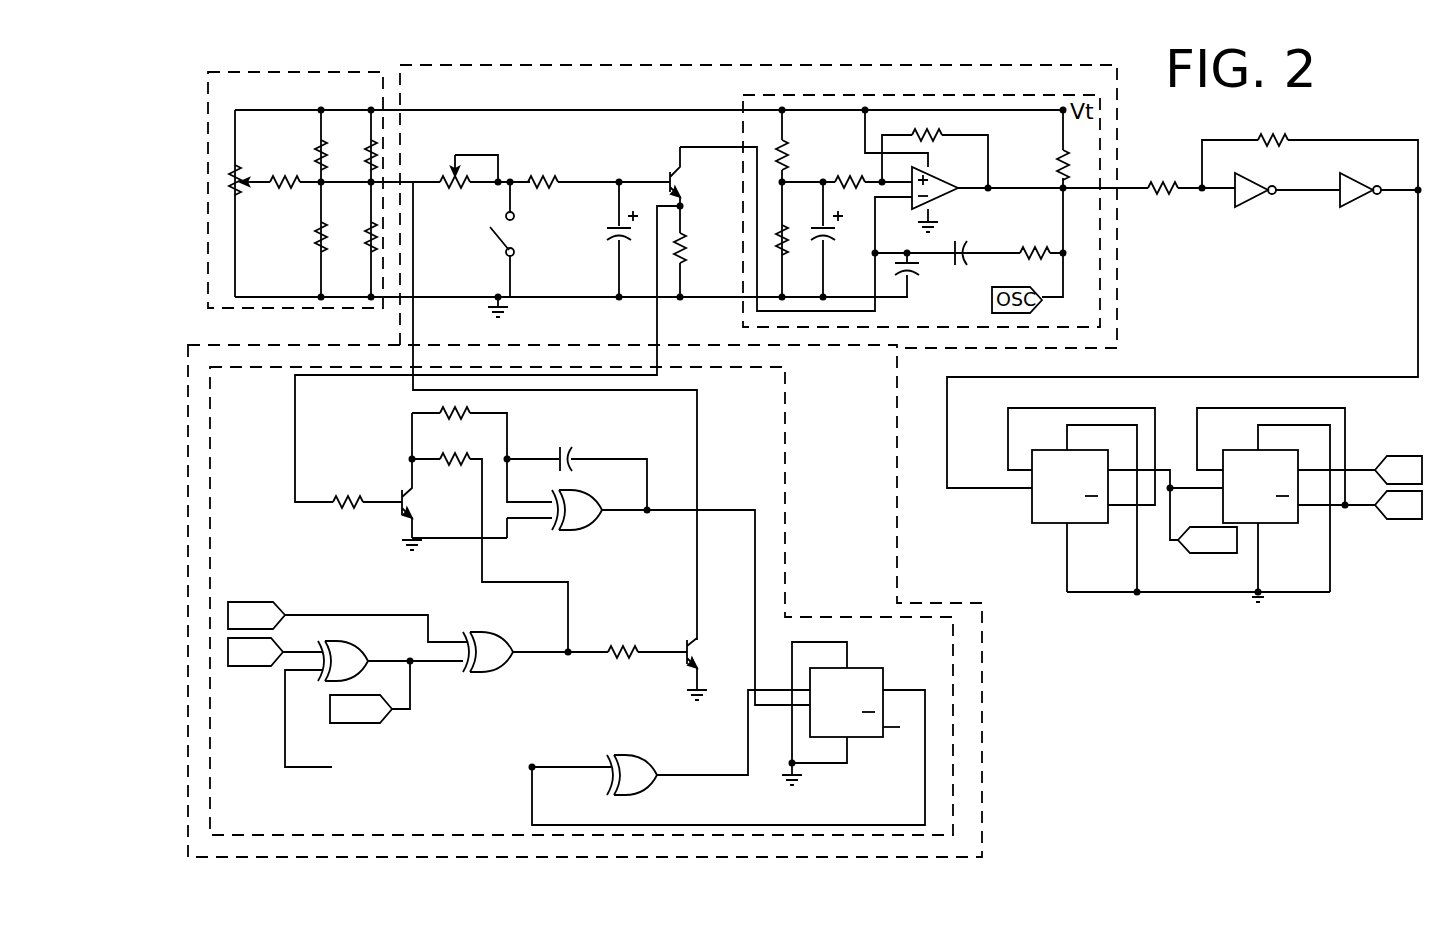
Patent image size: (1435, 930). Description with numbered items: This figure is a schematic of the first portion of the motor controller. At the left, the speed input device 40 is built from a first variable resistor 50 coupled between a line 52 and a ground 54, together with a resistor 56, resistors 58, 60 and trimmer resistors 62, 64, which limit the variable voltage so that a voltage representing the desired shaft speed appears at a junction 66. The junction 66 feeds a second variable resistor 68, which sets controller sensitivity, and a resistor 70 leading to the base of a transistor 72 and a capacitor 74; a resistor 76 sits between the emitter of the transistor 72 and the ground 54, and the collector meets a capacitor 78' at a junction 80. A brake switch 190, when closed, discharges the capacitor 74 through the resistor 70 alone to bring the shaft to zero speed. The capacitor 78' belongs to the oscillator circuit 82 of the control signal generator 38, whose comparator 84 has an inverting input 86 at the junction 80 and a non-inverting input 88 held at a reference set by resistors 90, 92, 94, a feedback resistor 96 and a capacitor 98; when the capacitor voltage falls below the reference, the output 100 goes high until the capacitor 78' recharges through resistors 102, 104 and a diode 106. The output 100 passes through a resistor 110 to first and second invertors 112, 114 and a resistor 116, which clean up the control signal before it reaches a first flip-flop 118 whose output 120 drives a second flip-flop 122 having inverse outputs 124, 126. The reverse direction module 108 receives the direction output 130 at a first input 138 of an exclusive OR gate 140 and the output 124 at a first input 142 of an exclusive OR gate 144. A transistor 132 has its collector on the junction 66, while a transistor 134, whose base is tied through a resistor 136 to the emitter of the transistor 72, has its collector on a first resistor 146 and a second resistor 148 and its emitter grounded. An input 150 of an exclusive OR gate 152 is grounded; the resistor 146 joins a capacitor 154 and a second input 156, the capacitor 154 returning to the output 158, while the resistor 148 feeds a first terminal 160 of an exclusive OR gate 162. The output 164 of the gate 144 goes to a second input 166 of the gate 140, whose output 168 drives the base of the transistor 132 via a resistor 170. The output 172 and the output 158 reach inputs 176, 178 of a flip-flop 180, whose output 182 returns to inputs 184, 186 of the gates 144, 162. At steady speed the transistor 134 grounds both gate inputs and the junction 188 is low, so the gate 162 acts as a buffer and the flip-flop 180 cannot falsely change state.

The control signal generator 38 is at (985, 745).
The speed input device 40 is at (364, 69).
The first variable resistor 50 is at (238, 195).
The line 52 is at (238, 111).
The ground 54 is at (502, 308).
The resistor 56 is at (278, 179).
The resistor 58 is at (318, 155).
The resistor 60 is at (318, 242).
The trimmer resistor 62 is at (368, 155).
The trimmer resistor 64 is at (369, 250).
The junction 66 is at (370, 186).
The second variable resistor 68 is at (466, 187).
The resistor 70 is at (540, 182).
The transistor 72 is at (686, 180).
The capacitor 74 is at (608, 225).
The resistor 76 is at (686, 254).
The capacitor 78' is at (923, 282).
The junction 80 is at (873, 253).
The oscillator circuit 82 is at (738, 97).
The comparator 84 is at (946, 196).
The inverting input 86 is at (898, 201).
The non-inverting input 88 is at (880, 153).
The resistor 90 is at (857, 174).
The resistor 92 is at (780, 152).
The resistor 94 is at (788, 236).
The feedback resistor 96 is at (940, 136).
The capacitor 98 is at (822, 241).
The output 100 is at (1024, 187).
The resistor 102 is at (1058, 158).
The resistor 104 is at (1033, 242).
The diode 106 is at (969, 258).
The reverse direction module 108 is at (787, 507).
The resistor 110 is at (1160, 186).
The first invertor 112 is at (1250, 204).
The second invertor 114 is at (1355, 204).
The resistor 116 is at (1295, 140).
The first flip-flop 118 is at (1046, 523).
The output 120 is at (1190, 488).
The second flip-flop 122 is at (1273, 500).
The output 124 is at (1365, 468).
The output 126 is at (1369, 508).
The output 130 is at (296, 614).
The transistor 132 is at (684, 667).
The transistor 134 is at (402, 516).
The resistor 136 is at (352, 497).
The first input 138 is at (454, 638).
The exclusive OR gate 140 is at (492, 642).
The first input 142 is at (305, 652).
The exclusive OR gate 144 is at (360, 660).
The first resistor 146 is at (437, 413).
The second resistor 148 is at (448, 458).
The input 150 is at (528, 518).
The exclusive OR gate 152 is at (580, 523).
The capacitor 154 is at (569, 450).
The second input 156 is at (527, 502).
The output 158 is at (634, 514).
The first terminal 160 is at (598, 783).
The exclusive OR gate 162 is at (650, 765).
The output 164 is at (402, 666).
The second input 166 is at (450, 668).
The output 168 is at (545, 655).
The resistor 170 is at (620, 650).
The output 172 is at (700, 775).
The input 176 is at (775, 690).
The input 178 is at (768, 705).
The flip-flop 180 is at (858, 740).
The output 182 is at (895, 688).
The input 184 is at (290, 672).
The input 186 is at (585, 765).
The junction 188 is at (581, 650).
The switch 190 is at (523, 226).